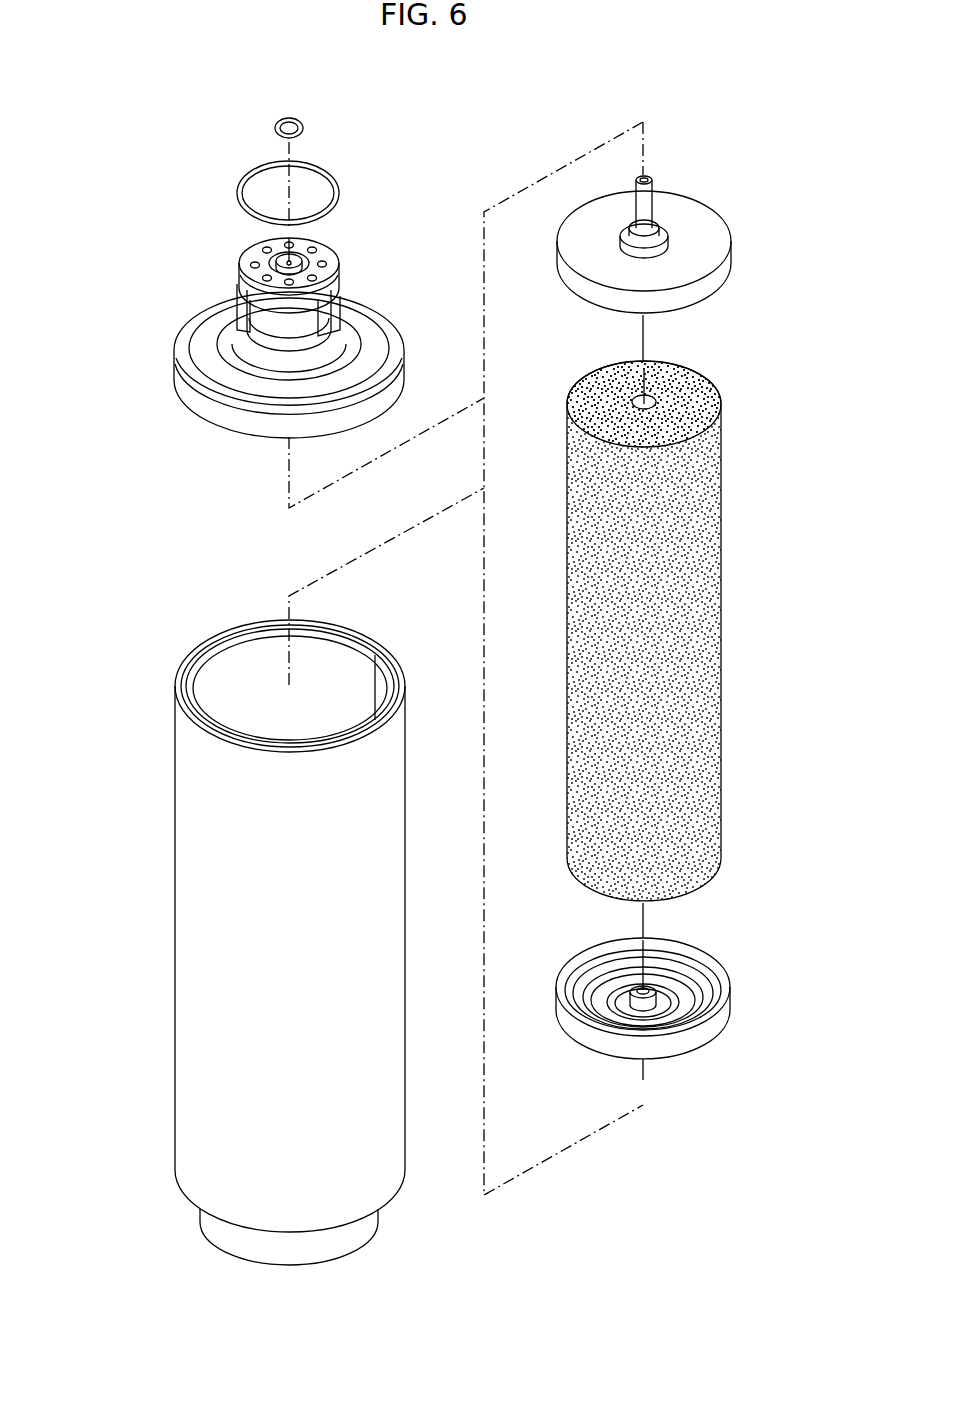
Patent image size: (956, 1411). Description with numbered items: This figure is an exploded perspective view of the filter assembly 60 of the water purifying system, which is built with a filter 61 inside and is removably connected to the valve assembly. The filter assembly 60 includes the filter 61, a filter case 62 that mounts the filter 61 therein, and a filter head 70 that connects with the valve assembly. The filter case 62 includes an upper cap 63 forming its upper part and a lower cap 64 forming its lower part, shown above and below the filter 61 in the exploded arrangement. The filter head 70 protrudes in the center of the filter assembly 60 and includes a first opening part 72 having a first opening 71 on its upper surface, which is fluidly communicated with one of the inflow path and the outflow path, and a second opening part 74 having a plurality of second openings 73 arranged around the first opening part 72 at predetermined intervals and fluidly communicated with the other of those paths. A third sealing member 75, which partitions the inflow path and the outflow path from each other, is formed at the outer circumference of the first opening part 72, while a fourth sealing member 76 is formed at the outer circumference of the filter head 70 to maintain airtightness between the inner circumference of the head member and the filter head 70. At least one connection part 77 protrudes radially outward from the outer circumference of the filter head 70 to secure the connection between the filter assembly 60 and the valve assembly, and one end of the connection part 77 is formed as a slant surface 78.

The filter assembly 60 is at (88, 553).
The filter 61 is at (714, 592).
The filter case 62 is at (193, 896).
The upper cap 63 is at (708, 236).
The lower cap 64 is at (708, 1024).
The filter head 70 is at (176, 338).
The first opening 71 is at (264, 251).
The first opening part 72 is at (272, 264).
The second openings 73 is at (316, 249).
The second opening part 74 is at (332, 271).
The third sealing member 75 is at (304, 122).
The fourth sealing member 76 is at (238, 194).
The connection part 77 is at (240, 296).
The slant surface 78 is at (218, 352).